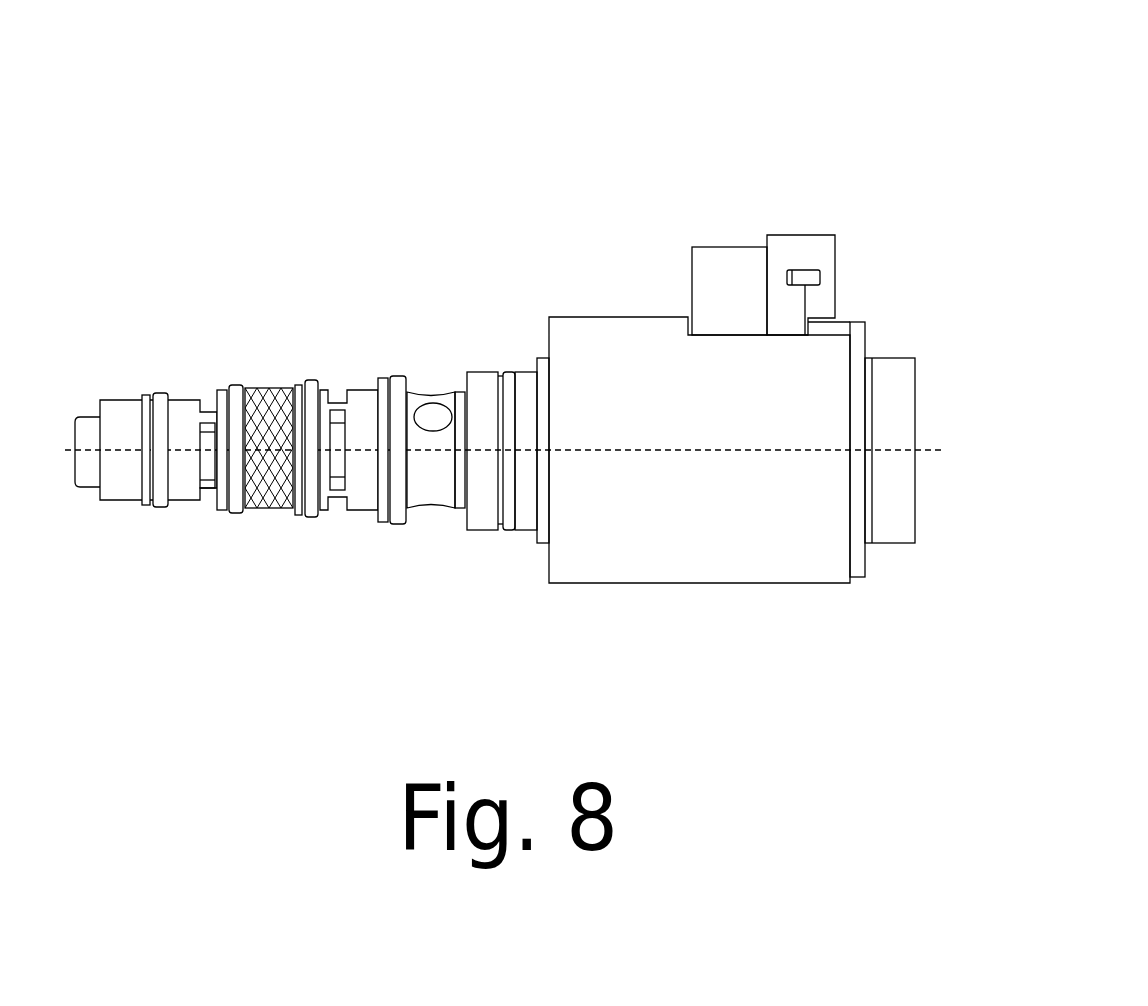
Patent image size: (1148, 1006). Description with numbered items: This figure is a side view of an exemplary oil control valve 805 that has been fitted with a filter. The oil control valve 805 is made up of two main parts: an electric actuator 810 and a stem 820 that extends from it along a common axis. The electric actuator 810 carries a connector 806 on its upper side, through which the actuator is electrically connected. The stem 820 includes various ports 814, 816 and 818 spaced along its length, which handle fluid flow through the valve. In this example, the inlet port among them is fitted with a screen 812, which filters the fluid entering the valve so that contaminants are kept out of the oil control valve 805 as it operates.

The oil control valve 805 is at (642, 97).
The connector 806 is at (790, 235).
The electric actuator 810 is at (733, 572).
The screen 812 is at (252, 513).
The port 814 is at (200, 403).
The port 816 is at (328, 510).
The port 818 is at (438, 392).
The stem 820 is at (243, 244).